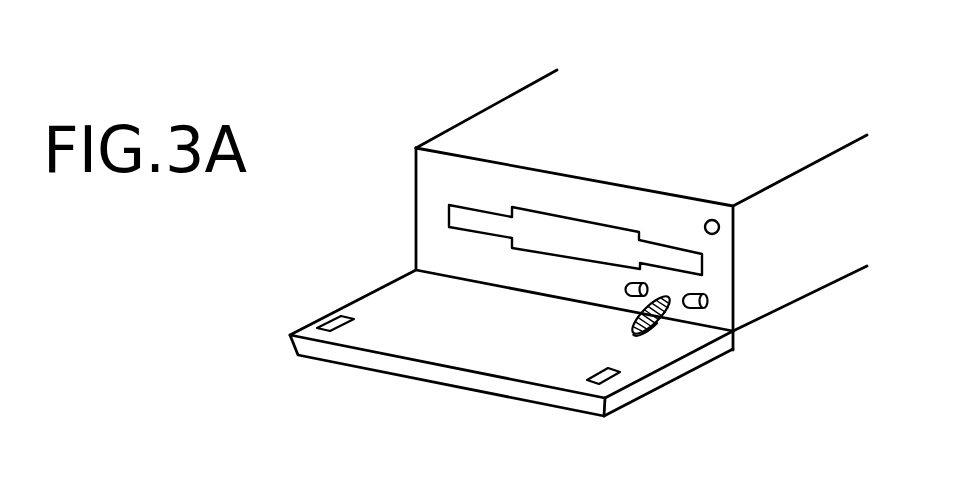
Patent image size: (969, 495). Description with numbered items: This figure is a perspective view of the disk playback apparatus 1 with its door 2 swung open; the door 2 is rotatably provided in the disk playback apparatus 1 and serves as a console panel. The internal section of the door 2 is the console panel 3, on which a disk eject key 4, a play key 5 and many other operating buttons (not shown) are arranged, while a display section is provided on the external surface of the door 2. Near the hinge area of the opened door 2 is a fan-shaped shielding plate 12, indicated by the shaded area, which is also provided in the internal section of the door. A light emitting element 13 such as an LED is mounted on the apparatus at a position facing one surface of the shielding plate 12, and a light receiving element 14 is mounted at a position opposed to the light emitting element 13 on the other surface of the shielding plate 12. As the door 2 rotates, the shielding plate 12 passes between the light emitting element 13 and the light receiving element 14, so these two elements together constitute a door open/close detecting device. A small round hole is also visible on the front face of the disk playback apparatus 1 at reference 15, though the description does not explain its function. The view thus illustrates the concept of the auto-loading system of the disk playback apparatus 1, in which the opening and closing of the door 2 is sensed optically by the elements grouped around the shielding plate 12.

The disk playback apparatus 1 is at (680, 105).
The door 2 is at (427, 373).
The console panel 3 is at (372, 303).
The disk eject key 4 is at (588, 383).
The play key 5 is at (327, 331).
The shielding plate 12 is at (658, 326).
The light emitting element 13 is at (630, 297).
The light receiving element 14 is at (707, 308).
The hole 15 is at (719, 227).